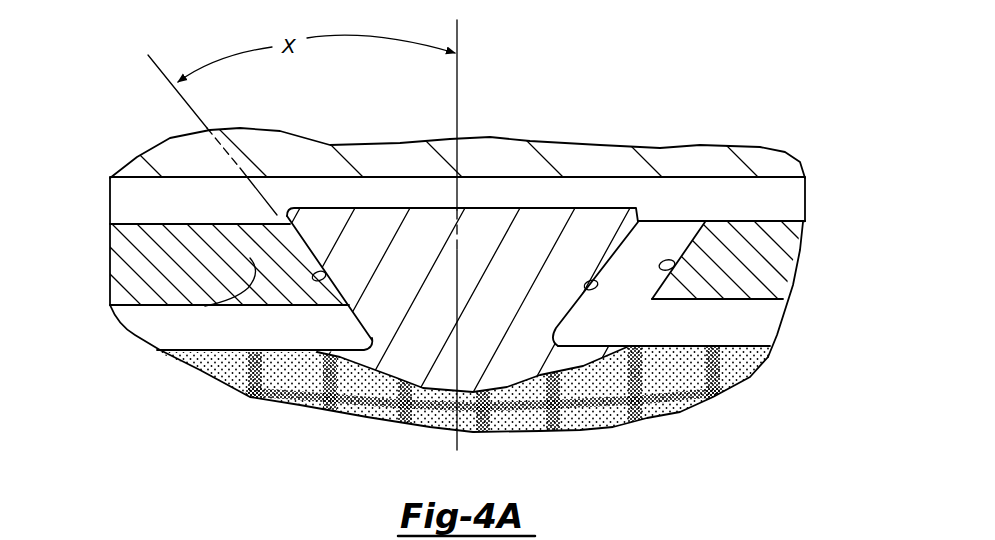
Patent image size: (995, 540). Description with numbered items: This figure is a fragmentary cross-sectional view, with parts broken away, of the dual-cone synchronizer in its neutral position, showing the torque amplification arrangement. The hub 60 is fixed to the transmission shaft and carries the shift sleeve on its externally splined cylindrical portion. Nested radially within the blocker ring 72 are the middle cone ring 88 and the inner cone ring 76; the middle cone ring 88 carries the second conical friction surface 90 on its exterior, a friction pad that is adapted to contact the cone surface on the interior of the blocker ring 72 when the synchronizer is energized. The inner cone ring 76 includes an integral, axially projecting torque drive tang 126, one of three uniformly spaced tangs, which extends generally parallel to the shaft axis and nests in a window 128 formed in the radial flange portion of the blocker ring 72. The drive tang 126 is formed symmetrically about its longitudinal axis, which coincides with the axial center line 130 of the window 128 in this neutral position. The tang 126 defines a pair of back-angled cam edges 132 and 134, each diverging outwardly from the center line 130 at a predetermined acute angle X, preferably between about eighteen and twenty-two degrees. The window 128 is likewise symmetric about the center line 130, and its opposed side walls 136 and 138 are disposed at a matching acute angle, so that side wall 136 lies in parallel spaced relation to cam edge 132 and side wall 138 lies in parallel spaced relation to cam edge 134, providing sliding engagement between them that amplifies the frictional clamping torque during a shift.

The hub 60 is at (750, 157).
The blocker ring 72 is at (150, 271).
The inner cone ring 76 is at (517, 362).
The middle cone ring 88 is at (723, 370).
The second conical friction surface 90 is at (680, 408).
The torque drive tang 126 is at (522, 215).
The window 128 is at (277, 242).
The center line 130 is at (458, 102).
The back-angled cam edge 132 is at (325, 274).
The back-angled cam edge 134 is at (585, 286).
The window side wall 136 is at (200, 305).
The window side wall 138 is at (673, 268).